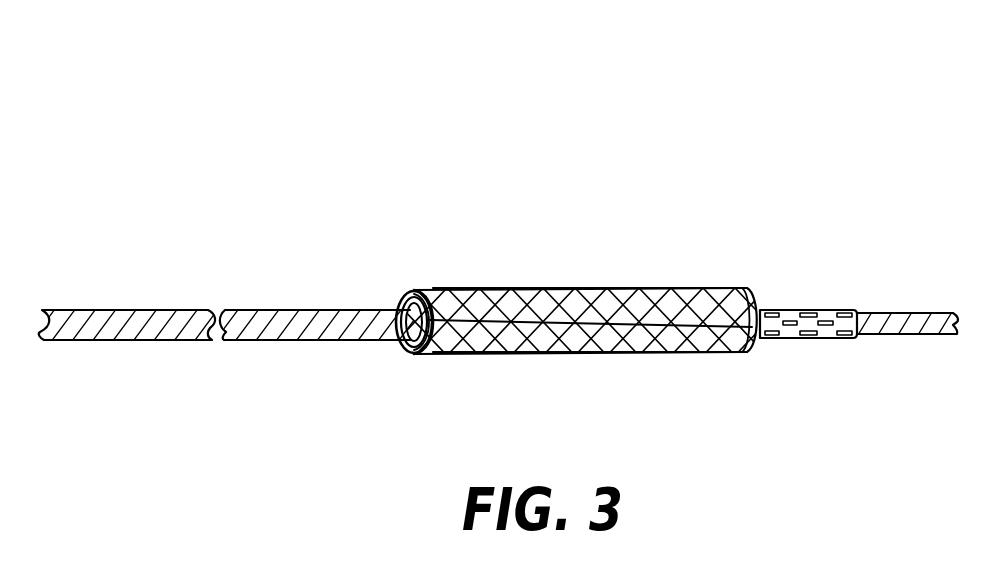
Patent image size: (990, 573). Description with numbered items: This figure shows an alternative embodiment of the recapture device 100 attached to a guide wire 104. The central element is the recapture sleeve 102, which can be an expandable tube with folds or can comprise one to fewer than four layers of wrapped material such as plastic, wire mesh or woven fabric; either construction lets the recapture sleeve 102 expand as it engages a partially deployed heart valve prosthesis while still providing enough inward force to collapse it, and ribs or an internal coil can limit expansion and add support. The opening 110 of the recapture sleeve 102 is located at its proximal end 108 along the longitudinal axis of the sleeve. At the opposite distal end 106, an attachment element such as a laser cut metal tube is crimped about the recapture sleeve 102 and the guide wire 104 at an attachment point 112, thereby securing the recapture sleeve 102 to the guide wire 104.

The recapture device 100 is at (426, 126).
The recapture sleeve 102 is at (597, 286).
The guide wire 104 is at (152, 318).
The distal end 106 is at (758, 298).
The proximal end 108 is at (415, 286).
The opening 110 is at (405, 308).
The attachment point 112 is at (800, 340).